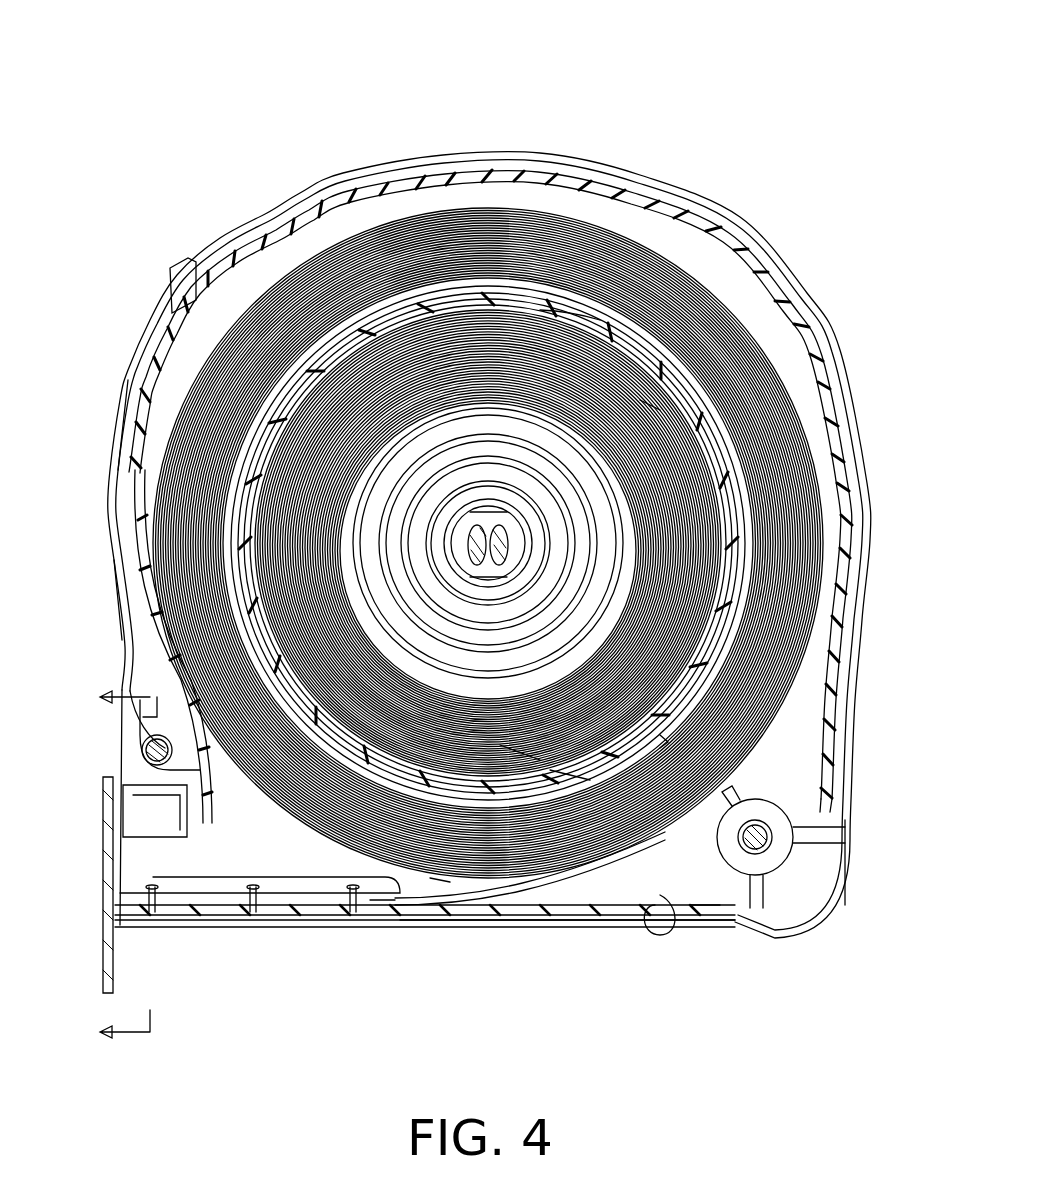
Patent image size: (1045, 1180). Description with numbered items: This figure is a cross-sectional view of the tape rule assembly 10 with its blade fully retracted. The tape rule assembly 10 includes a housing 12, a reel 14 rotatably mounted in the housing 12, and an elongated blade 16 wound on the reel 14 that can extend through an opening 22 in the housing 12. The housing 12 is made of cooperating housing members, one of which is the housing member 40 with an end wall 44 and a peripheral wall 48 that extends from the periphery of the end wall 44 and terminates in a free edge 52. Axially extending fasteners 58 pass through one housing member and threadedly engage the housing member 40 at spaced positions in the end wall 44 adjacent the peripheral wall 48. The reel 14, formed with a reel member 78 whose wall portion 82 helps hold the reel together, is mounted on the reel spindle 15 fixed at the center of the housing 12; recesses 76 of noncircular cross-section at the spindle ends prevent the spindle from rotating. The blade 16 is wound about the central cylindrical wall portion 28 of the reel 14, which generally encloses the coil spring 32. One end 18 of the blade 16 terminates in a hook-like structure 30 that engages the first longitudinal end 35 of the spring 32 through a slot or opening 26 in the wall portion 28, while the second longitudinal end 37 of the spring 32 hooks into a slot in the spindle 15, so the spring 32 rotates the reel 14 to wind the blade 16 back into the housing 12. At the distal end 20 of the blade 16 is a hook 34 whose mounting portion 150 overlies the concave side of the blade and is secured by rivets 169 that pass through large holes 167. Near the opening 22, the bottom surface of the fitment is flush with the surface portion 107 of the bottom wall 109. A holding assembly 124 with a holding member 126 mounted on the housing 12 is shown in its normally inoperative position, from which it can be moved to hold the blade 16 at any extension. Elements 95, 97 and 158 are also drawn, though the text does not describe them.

The tape rule assembly 10 is at (742, 68).
The housing 12 is at (872, 494).
The reel 14 is at (652, 345).
The reel spindle 15 is at (477, 525).
The elongated blade 16 is at (790, 625).
The end of the blade 18 is at (668, 750).
The distal end 20 is at (232, 913).
The opening 22 is at (125, 810).
The opening 26 is at (730, 585).
The central cylindrical wall portion 28 is at (597, 325).
The hook-like structure 30 is at (668, 742).
The coil spring 32 is at (650, 405).
The hook 34 is at (105, 930).
The first longitudinal end of the return spring 35 is at (668, 735).
The second longitudinal end of the spring 37 is at (495, 525).
The housing member 40 is at (805, 290).
The end wall 44 is at (803, 817).
The peripheral wall 48 is at (855, 850).
The free edge 52 is at (835, 670).
The fasteners 58 is at (762, 840).
The recesses 76 is at (523, 752).
The reel member 78 is at (565, 310).
The wall portion 82 is at (566, 778).
The guide 95 is at (695, 915).
The guide tab 97 is at (650, 940).
The surface portion 107 is at (165, 920).
The bottom wall 109 is at (355, 925).
The holding assembly 124 is at (125, 415).
The holding member 126 is at (150, 372).
The mounting portion 150 is at (178, 893).
The tape exit 158 is at (440, 880).
The holes 167 is at (350, 912).
The rivets 169 is at (378, 915).